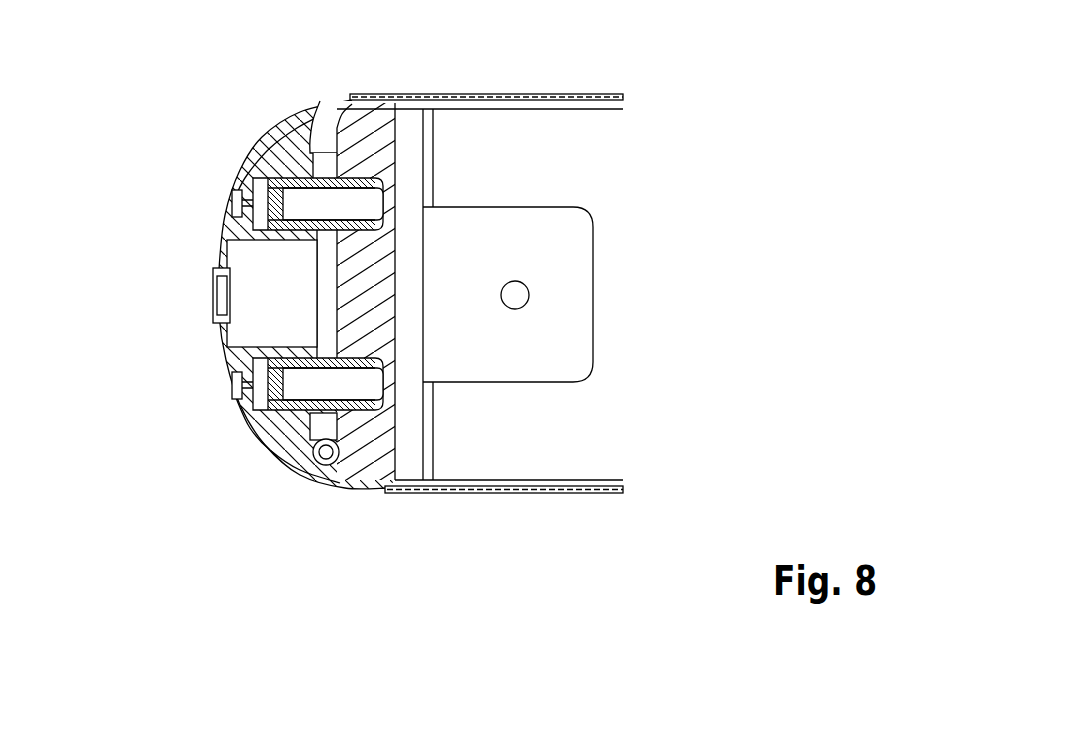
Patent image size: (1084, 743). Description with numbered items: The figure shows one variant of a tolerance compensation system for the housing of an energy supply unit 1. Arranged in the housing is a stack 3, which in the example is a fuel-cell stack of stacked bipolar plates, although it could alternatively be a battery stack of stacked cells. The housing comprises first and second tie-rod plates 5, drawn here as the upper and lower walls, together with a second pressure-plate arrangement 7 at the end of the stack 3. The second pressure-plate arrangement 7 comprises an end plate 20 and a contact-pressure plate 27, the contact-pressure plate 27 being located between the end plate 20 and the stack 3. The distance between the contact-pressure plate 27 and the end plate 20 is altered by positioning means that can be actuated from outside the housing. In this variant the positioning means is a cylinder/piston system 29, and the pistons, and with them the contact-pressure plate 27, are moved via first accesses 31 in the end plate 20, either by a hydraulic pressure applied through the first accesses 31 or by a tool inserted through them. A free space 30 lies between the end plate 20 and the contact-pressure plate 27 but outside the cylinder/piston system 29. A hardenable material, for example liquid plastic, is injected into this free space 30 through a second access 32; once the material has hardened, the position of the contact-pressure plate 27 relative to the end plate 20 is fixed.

The energy supply unit 1 is at (712, 118).
The stack 3 is at (606, 184).
The tie-rod plate 5 is at (597, 96).
The second pressure-plate arrangement 7 is at (472, 145).
The end plate 20 is at (290, 137).
The contact-pressure plate 27 is at (375, 145).
The cylinder/piston system 29 is at (293, 173).
The free space 30 is at (262, 318).
The first access 31 is at (237, 203).
The second access 32 is at (220, 290).